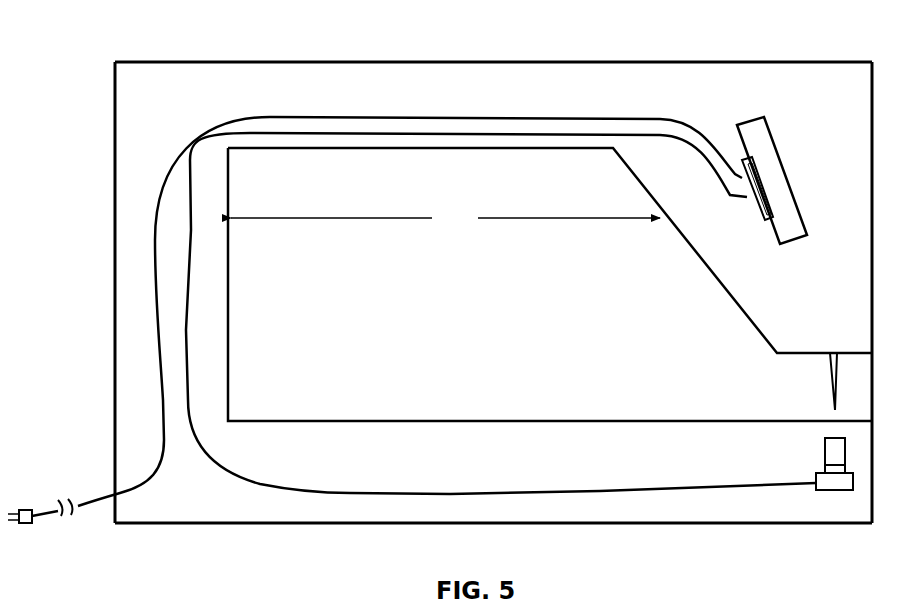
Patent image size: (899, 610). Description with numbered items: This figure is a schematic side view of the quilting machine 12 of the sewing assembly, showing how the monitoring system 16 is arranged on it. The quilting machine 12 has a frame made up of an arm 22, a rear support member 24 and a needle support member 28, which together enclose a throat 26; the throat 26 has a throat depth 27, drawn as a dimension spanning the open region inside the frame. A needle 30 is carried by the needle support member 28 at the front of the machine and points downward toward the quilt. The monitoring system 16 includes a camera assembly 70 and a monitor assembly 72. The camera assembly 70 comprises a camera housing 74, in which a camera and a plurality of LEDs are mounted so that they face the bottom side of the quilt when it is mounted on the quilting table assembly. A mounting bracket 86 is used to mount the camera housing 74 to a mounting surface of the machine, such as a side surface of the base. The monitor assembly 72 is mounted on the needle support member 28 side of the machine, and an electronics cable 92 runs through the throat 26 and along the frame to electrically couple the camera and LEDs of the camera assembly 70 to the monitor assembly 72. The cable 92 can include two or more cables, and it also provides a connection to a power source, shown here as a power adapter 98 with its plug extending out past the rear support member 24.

The quilting machine 12 is at (458, 292).
The arm 22 is at (460, 60).
The rear support member 24 is at (113, 276).
The needle support member 28 is at (868, 139).
The monitoring system 16 is at (782, 139).
The monitor assembly 72 is at (738, 119).
The throat 26 is at (229, 347).
The throat depth 27 is at (445, 218).
The needle 30 is at (822, 367).
The power adapter 98 is at (162, 372).
The electronics cable 92 is at (493, 493).
The mounting bracket 86 is at (825, 445).
The camera assembly 70 is at (816, 489).
The camera housing 74 is at (838, 484).